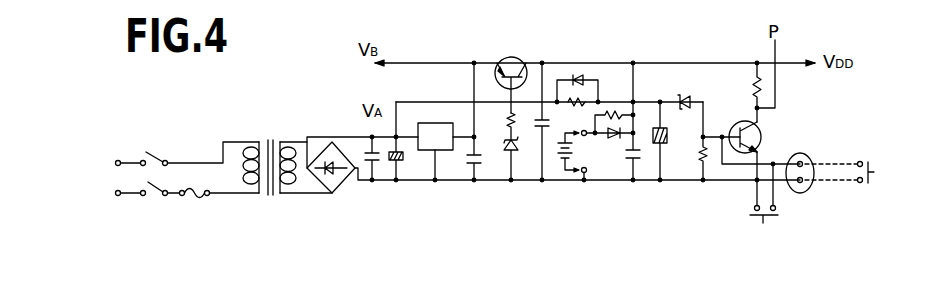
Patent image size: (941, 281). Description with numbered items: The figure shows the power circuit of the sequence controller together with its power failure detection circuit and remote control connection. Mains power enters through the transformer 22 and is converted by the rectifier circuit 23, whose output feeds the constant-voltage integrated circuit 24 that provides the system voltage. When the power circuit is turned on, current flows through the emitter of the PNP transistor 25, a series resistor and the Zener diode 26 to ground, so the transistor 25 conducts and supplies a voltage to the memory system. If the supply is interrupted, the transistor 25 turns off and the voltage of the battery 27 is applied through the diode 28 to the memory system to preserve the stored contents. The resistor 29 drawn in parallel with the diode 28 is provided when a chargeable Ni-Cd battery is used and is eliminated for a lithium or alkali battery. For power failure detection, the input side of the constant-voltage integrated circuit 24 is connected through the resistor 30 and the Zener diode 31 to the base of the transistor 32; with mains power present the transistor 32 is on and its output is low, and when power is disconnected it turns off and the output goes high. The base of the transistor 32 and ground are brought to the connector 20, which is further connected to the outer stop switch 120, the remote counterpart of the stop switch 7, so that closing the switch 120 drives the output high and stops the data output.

The transformer 22 is at (269, 154).
The rectifier circuit 23 is at (331, 153).
The constant-voltage integrated circuit 24 is at (435, 136).
The PNP transistor 25 is at (508, 57).
The Zener diode 26 is at (518, 141).
The battery 27 is at (559, 172).
The diode 28 is at (606, 138).
The resistor 29 is at (610, 114).
The resistor 30 is at (570, 104).
The Zener diode 31 is at (687, 90).
The transistor 32 is at (762, 137).
The stop switch 7 is at (758, 216).
The connector 20 is at (807, 155).
The outer stop switch 120 is at (844, 160).